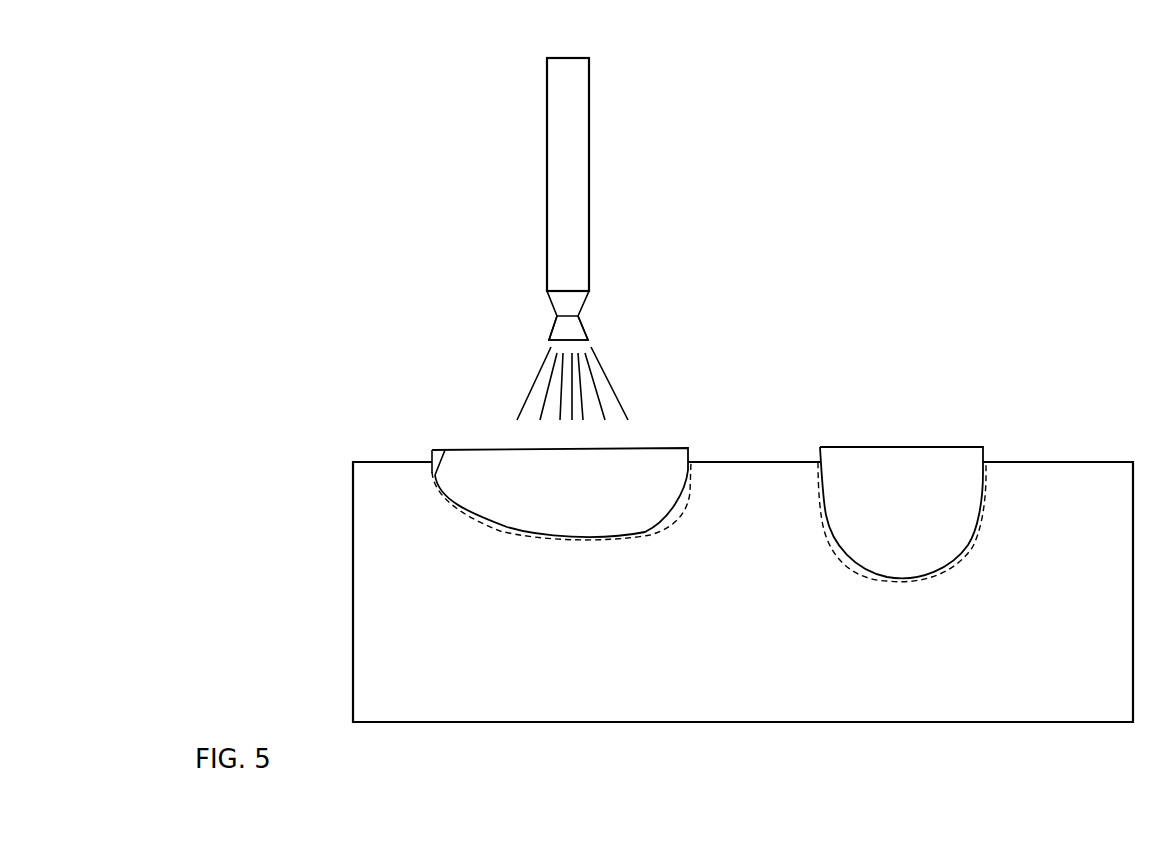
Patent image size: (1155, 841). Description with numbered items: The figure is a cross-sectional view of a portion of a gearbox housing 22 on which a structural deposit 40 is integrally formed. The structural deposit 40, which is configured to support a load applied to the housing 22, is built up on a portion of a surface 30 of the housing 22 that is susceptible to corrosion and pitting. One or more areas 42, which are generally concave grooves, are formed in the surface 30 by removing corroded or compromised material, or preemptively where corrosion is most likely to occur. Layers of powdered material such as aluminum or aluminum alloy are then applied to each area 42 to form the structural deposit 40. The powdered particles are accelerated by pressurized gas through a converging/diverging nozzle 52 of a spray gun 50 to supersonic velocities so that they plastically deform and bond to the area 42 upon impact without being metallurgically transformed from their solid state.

The gearbox housing 22 is at (256, 94).
The surface 30 is at (1065, 458).
The structural deposit 40 is at (667, 460).
The area 42 is at (445, 450).
The spray gun 50 is at (637, 141).
The converging/diverging nozzle 52 is at (566, 328).